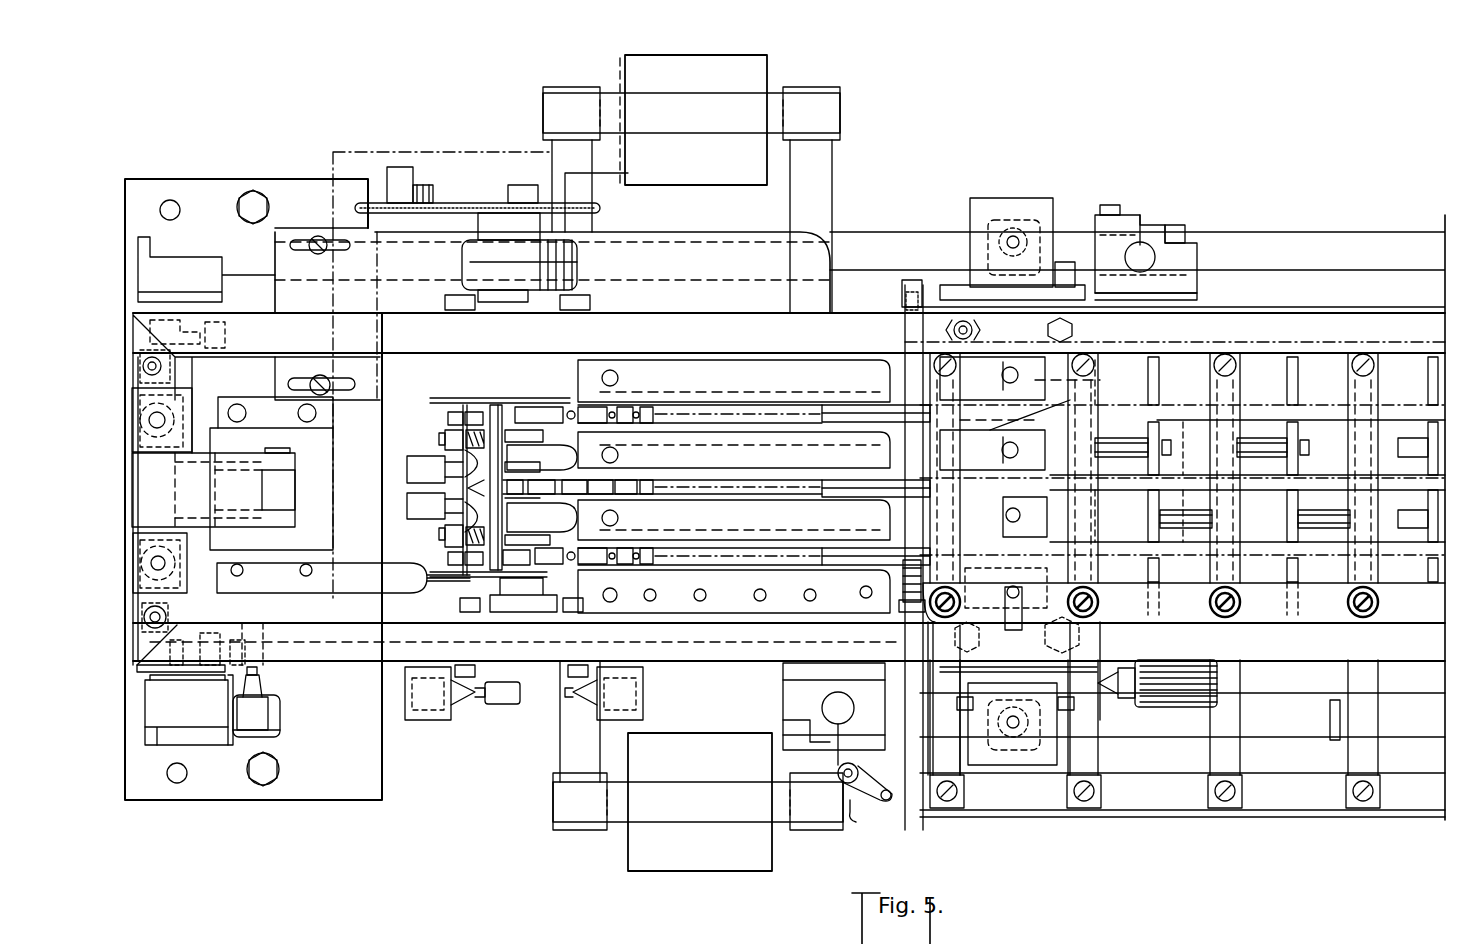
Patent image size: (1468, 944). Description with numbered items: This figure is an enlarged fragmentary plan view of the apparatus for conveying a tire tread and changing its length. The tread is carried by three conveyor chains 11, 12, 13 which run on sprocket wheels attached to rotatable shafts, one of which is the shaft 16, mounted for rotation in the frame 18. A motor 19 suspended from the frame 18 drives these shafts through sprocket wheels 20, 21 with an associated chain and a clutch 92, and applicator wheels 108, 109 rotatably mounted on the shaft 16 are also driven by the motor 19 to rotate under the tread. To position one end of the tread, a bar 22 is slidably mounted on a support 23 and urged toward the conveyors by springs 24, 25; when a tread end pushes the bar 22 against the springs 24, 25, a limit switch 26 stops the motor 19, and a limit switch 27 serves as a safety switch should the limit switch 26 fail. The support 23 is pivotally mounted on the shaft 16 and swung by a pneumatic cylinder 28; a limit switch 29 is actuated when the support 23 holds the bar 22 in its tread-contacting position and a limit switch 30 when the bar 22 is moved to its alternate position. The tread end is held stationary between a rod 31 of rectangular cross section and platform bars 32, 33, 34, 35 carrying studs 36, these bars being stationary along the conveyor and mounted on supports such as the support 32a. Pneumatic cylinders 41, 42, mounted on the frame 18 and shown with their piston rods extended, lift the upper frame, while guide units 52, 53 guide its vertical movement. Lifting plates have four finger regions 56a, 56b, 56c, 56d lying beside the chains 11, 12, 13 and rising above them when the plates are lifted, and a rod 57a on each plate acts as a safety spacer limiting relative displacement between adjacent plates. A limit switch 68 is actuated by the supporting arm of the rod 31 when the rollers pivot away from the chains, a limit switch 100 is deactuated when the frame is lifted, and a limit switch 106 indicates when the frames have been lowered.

The chain 11 is at (648, 407).
The chain 12 is at (648, 480).
The chain 13 is at (648, 548).
The rotatable shaft 16 is at (540, 440).
The frame 18 is at (668, 313).
The motor 19 is at (688, 240).
The sprocket wheel 20 is at (437, 203).
The sprocket wheel 21 is at (487, 203).
The bar 22 is at (506, 505).
The support 23 is at (445, 445).
The spring 24 is at (485, 458).
The spring 25 is at (485, 515).
The limit switch 26 is at (407, 470).
The limit switch 27 is at (407, 508).
The pneumatic cylinder 28 is at (398, 563).
The limit switch 29 is at (405, 690).
The limit switch 30 is at (597, 690).
The rod 31 is at (958, 452).
The platform bar 32 is at (978, 400).
The support 32a is at (1075, 405).
The platform bar 33 is at (830, 480).
The platform bar 34 is at (830, 548).
The platform bar 35 is at (838, 613).
The stud 36 is at (870, 620).
The pneumatic cylinder 41 is at (1002, 768).
The pneumatic cylinder 42 is at (1037, 198).
The guide unit 52 is at (1160, 215).
The guide unit 53 is at (1197, 253).
The finger region 56a is at (1148, 372).
The finger region 56b is at (1148, 440).
The finger region 56c is at (1148, 510).
The finger region 56d is at (1148, 572).
The rod 57a is at (1270, 452).
The limit switch 68 is at (837, 753).
The clutch 92 is at (577, 266).
The limit switch 100 is at (1190, 705).
The limit switch 106 is at (262, 688).
The applicator wheel 108 is at (596, 462).
The applicator wheel 109 is at (599, 515).